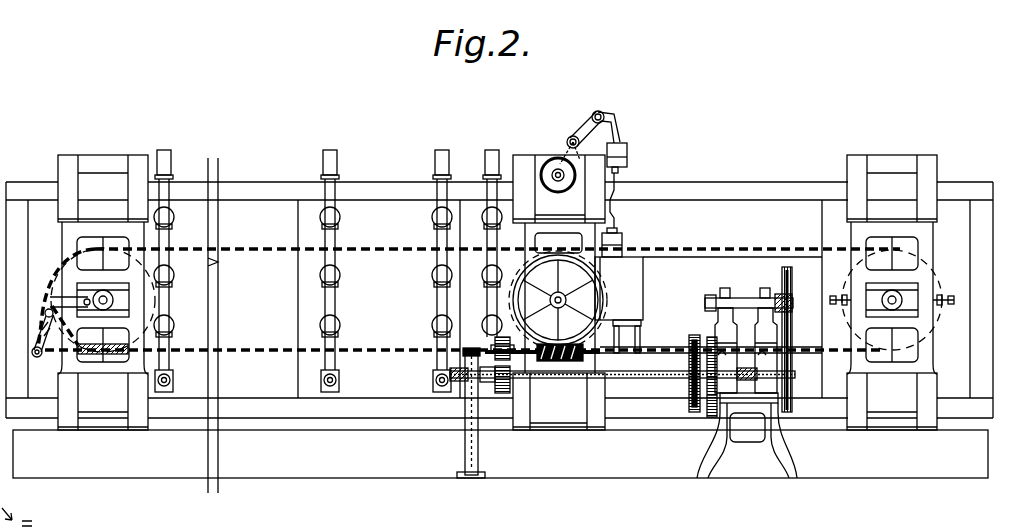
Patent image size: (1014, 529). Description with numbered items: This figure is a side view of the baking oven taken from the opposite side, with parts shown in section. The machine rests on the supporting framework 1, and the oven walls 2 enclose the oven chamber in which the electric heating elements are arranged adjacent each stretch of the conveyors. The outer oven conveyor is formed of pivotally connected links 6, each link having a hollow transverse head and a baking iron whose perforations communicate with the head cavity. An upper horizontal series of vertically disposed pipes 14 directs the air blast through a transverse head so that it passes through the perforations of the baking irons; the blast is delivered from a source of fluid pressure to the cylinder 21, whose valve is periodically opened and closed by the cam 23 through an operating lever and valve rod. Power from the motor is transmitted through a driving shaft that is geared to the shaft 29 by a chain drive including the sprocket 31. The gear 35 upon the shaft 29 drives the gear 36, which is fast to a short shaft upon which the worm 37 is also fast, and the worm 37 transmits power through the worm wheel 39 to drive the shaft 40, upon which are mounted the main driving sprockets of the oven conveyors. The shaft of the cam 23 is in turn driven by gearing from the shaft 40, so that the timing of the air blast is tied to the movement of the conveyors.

The supporting framework 1 is at (500, 454).
The oven walls 2 is at (499, 189).
The links of outer oven conveyor 6 is at (240, 245).
The vertically disposed pipes 14 is at (618, 176).
The cylinder 21 is at (623, 243).
The cam 23 is at (560, 165).
The shaft 29 is at (664, 379).
The chain drive sprocket 31 is at (694, 336).
The gear 35 is at (505, 393).
The gear 36 is at (496, 340).
The worm 37 is at (575, 363).
The worm wheel 39 is at (640, 298).
The shaft 40 is at (567, 300).